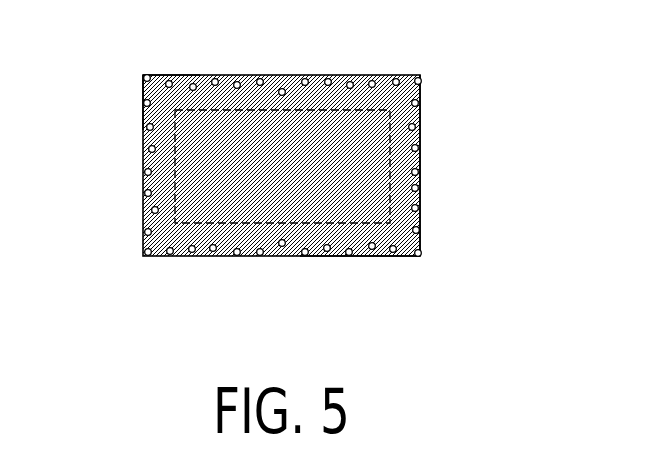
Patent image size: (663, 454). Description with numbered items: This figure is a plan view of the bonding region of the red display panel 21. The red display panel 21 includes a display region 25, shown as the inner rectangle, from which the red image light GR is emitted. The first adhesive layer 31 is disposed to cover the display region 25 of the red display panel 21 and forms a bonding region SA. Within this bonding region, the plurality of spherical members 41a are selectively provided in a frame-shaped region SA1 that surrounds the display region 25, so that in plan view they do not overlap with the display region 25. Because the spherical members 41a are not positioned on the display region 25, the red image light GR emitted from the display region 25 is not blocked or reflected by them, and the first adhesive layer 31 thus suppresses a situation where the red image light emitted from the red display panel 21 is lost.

The red display panel 21 is at (360, 62).
The display region 25 is at (226, 110).
The spherical members 41a is at (143, 78).
The first adhesive layer 31 is at (422, 137).
The frame-shaped region SA1 is at (384, 246).